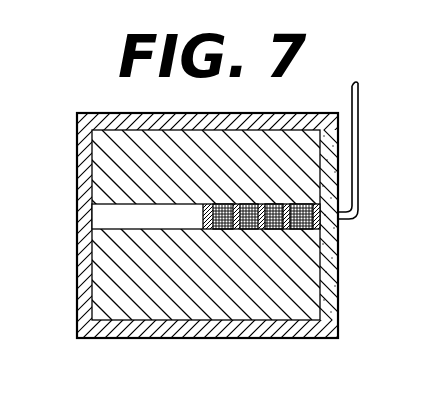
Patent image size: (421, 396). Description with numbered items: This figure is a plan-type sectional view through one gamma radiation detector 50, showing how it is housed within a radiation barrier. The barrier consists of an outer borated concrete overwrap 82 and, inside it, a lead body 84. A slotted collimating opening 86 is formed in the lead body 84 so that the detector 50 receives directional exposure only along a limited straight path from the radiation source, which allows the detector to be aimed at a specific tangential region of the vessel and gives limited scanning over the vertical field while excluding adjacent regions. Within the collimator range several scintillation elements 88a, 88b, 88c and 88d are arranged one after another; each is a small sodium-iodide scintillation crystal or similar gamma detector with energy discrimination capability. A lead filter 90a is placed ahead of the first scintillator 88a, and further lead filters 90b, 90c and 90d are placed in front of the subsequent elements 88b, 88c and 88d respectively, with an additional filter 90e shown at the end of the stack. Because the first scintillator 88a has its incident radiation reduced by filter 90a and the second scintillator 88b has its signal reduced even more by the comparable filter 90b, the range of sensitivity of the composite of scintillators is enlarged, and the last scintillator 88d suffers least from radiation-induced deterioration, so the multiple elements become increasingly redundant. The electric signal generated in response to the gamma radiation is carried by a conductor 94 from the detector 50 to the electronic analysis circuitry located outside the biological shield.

The detector 50 is at (98, 113).
The borated concrete overwrap 82 is at (232, 338).
The lead body 84 is at (89, 301).
The slotted collimating opening 86 is at (125, 210).
The scintillation element 88a is at (222, 230).
The scintillation element 88b is at (248, 230).
The scintillation element 88c is at (274, 230).
The scintillation element 88d is at (302, 230).
The lead filter 90a is at (208, 208).
The lead filter 90b is at (233, 204).
The lead filter 90c is at (262, 204).
The lead filter 90d is at (286, 204).
The spacer 90e is at (315, 204).
The conductor 94 is at (351, 99).